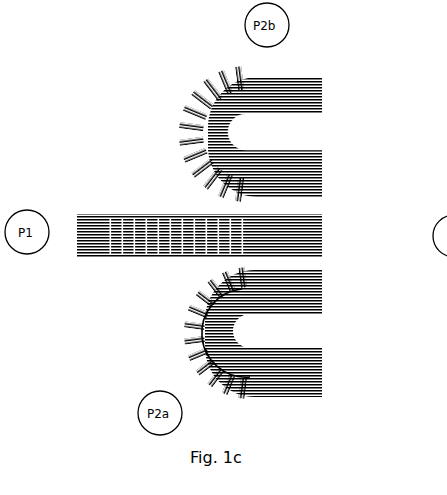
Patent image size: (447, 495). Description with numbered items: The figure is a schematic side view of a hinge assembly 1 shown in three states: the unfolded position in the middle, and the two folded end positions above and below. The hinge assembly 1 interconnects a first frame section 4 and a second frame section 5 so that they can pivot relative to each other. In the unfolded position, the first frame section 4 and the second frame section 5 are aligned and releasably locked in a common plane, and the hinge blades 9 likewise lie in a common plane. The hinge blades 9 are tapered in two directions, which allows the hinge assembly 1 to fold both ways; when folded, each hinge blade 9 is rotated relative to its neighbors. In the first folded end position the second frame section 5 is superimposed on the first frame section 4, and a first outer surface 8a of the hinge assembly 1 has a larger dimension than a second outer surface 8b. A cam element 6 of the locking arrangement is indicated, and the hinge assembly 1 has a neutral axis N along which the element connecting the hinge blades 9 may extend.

The hinge assembly 1 is at (120, 149).
The first frame section 4 is at (98, 238).
The second frame section 5 is at (293, 180).
The cam element 6 is at (208, 100).
The first outer surface 8a is at (170, 112).
The second outer surface 8b is at (246, 132).
The hinge blades 9 is at (200, 235).
The neutral axis N is at (203, 335).